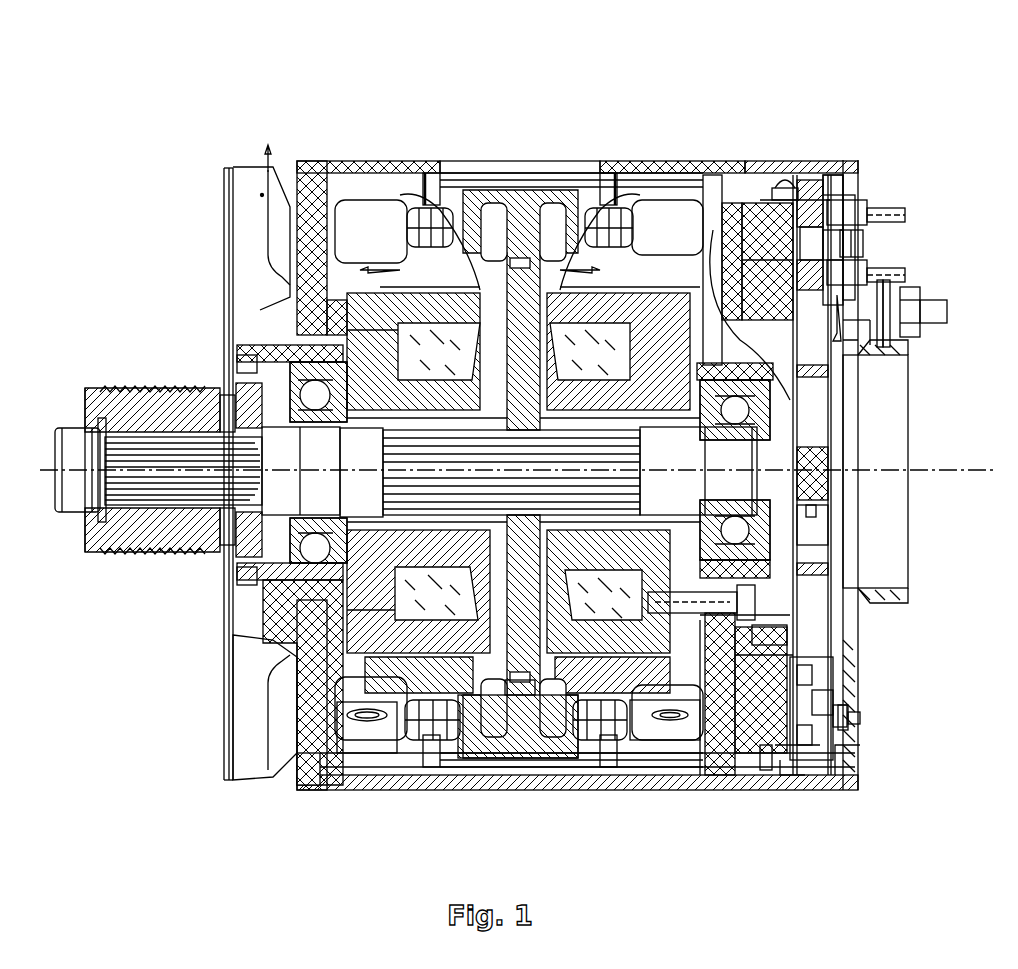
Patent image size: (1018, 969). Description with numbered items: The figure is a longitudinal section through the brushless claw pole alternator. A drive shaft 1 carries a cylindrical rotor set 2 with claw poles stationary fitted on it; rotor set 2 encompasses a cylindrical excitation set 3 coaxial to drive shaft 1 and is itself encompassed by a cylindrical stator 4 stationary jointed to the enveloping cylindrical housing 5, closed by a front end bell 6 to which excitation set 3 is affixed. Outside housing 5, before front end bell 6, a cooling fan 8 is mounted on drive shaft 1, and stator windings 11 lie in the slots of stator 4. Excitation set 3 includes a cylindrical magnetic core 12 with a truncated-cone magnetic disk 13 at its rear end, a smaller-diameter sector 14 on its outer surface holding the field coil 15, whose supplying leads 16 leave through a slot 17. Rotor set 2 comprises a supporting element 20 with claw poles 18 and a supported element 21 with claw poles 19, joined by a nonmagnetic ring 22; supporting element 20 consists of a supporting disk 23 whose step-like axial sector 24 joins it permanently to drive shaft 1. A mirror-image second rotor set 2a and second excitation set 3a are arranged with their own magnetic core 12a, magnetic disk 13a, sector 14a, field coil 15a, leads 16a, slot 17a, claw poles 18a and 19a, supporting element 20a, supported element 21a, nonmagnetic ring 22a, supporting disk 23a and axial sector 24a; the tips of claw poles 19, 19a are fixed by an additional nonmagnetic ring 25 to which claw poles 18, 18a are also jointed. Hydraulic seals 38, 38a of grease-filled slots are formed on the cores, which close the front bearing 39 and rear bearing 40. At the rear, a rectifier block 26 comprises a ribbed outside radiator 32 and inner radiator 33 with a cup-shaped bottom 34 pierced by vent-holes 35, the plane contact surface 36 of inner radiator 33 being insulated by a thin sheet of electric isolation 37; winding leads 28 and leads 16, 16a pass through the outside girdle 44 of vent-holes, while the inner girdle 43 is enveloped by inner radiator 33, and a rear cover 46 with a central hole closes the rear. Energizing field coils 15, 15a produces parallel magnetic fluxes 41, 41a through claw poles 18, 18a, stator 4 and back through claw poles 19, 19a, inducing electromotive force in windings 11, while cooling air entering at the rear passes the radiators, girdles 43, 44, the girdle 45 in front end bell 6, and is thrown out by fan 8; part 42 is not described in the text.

The drive shaft 1 is at (289, 484).
The rotor set 2 is at (300, 777).
The second rotor set 2a is at (737, 790).
The excitation set 3 is at (295, 697).
The second excitation set 3a is at (855, 757).
The stator 4 is at (520, 210).
The housing 5 is at (535, 230).
The front end bell 6 is at (262, 195).
The cooling fan 8 is at (298, 255).
The stator windings 11 is at (613, 218).
The magnetic core 12 is at (388, 355).
The magnetic core of second excitation set 12a is at (790, 655).
The magnetic disk 13 is at (325, 295).
The magnetic disk of second excitation set 13a is at (745, 615).
The sector 14 is at (372, 392).
The sector of second excitation set 14a is at (688, 603).
The field coil 15 is at (347, 320).
The field coil of second excitation set 15a is at (865, 730).
The supplying leads 16 is at (378, 350).
The supplying leads of second field coil 16a is at (862, 250).
The slot 17 is at (365, 340).
The slot of second magnetic core 17a is at (850, 232).
The claw poles 18 is at (440, 222).
The claw poles of second rotor set 18a is at (562, 215).
The claw poles 19 is at (415, 660).
The claw poles of second rotor set 19a is at (575, 680).
The supporting element 20 is at (487, 683).
The supporting element of second rotor set 20a is at (540, 683).
The supported element 21 is at (330, 785).
The supported element of second rotor set 21a is at (660, 780).
The nonmagnetic ring 22 is at (370, 235).
The nonmagnetic ring of second rotor set 22a is at (578, 215).
The supporting disk 23 is at (400, 210).
The supporting disk of second rotor set 23a is at (542, 262).
The step-like axial sector 24 is at (233, 387).
The step-like axial sector of second rotor set 24a is at (665, 250).
The additional nonmagnetic ring 25 is at (483, 205).
The rectifier block 26 is at (858, 205).
The leads of three-phase windings 28 is at (782, 165).
The outside radiator 32 is at (860, 212).
The inner radiator 33 is at (870, 262).
The cup-shaped bottom 34 is at (812, 483).
The vent-holes 35 is at (813, 515).
The plane contact surface 36 is at (872, 300).
The sheet of electric isolation 37 is at (855, 285).
The hydraulic seal 38 is at (325, 575).
The hydraulic seal 38a is at (758, 548).
The front bearing 39 is at (318, 548).
The rear bearing 40 is at (775, 535).
The magnetic flux 41 is at (380, 378).
The magnetic flux 41a is at (745, 412).
The end plate 42 is at (872, 405).
The inner girdle of vent-holes 43 is at (908, 355).
The outside girdle of vent-holes 44 is at (723, 190).
The girdle of vent-holes 45 is at (385, 350).
The rear cover 46 is at (848, 680).